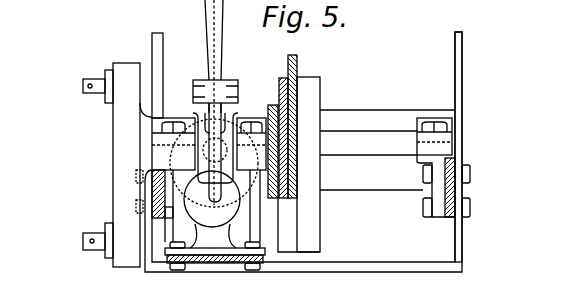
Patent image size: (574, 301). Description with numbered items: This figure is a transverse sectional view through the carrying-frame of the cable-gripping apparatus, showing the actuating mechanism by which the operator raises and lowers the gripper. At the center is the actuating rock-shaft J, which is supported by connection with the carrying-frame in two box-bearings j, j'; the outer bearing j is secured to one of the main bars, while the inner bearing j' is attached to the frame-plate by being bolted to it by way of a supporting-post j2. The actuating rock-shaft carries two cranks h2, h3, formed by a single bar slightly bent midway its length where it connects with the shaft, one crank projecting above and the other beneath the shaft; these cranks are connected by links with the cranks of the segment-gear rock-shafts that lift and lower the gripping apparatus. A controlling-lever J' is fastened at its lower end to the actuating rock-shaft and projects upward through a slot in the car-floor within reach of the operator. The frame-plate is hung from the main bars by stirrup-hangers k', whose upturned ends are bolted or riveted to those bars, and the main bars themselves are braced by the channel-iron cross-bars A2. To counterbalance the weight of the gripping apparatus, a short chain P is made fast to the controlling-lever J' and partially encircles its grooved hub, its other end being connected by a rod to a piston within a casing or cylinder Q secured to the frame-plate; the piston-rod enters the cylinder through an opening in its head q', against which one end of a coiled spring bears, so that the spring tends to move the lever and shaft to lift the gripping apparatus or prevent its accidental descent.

The crank h2 is at (82, 86).
The crank h3 is at (82, 240).
The controlling-lever J' is at (215, 102).
The actuating rock-shaft J is at (205, 143).
The box-bearing j is at (173, 144).
The box-bearing j' is at (251, 144).
The supporting-post j2 is at (254, 206).
The cylinder head q' is at (212, 199).
The chain P is at (214, 159).
The casing or cylinder Q is at (215, 220).
The stirrup-hanger k' is at (297, 152).
The cross-bar A2 is at (361, 153).